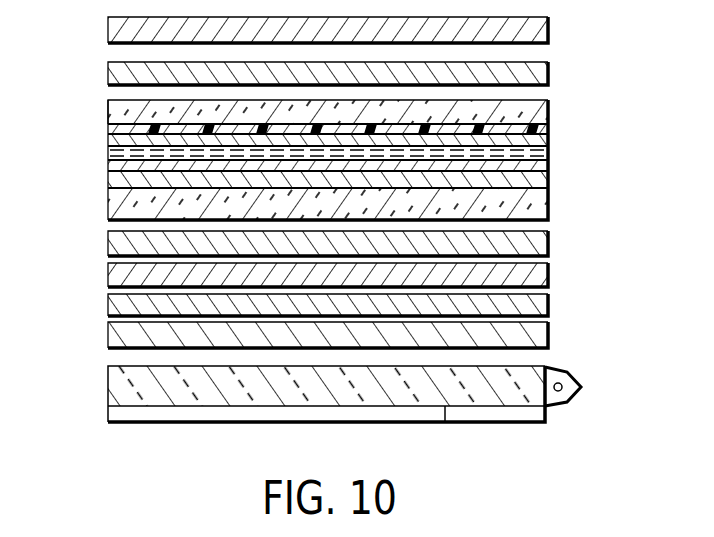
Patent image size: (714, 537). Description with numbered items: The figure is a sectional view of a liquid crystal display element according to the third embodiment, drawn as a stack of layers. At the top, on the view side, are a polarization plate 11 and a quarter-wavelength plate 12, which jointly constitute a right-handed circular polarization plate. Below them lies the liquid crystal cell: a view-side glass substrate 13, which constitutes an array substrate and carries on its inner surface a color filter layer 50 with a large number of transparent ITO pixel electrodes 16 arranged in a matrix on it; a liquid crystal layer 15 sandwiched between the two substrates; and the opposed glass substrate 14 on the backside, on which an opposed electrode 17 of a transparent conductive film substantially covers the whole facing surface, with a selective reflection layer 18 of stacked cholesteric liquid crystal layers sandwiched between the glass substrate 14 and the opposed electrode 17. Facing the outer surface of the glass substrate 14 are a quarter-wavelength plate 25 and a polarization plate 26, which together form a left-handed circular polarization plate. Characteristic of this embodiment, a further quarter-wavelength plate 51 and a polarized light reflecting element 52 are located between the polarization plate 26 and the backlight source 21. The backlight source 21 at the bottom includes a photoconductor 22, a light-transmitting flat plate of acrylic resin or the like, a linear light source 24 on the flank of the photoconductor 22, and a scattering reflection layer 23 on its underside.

The polarization plate 11 is at (553, 30).
The λ/4-wavelength plate 12 is at (551, 70).
The glass substrate 13 is at (551, 112).
The color filter layer 50 is at (107, 126).
The pixel electrodes 16 is at (551, 142).
The liquid crystal layer 15 is at (551, 152).
The opposed electrode 17 is at (107, 165).
The selective reflection layer 18 is at (551, 178).
The glass substrate 14 is at (551, 200).
The λ/4-wavelength plate 25 is at (107, 240).
The polarization plate 26 is at (107, 272).
The λ/4-wavelength plate 51 is at (107, 303).
The polarized light reflecting element 52 is at (107, 332).
The photoconductor 22 is at (107, 387).
The scattering reflection layer 23 is at (445, 422).
The linear light source 24 is at (572, 397).
The backlight source 21 is at (340, 427).